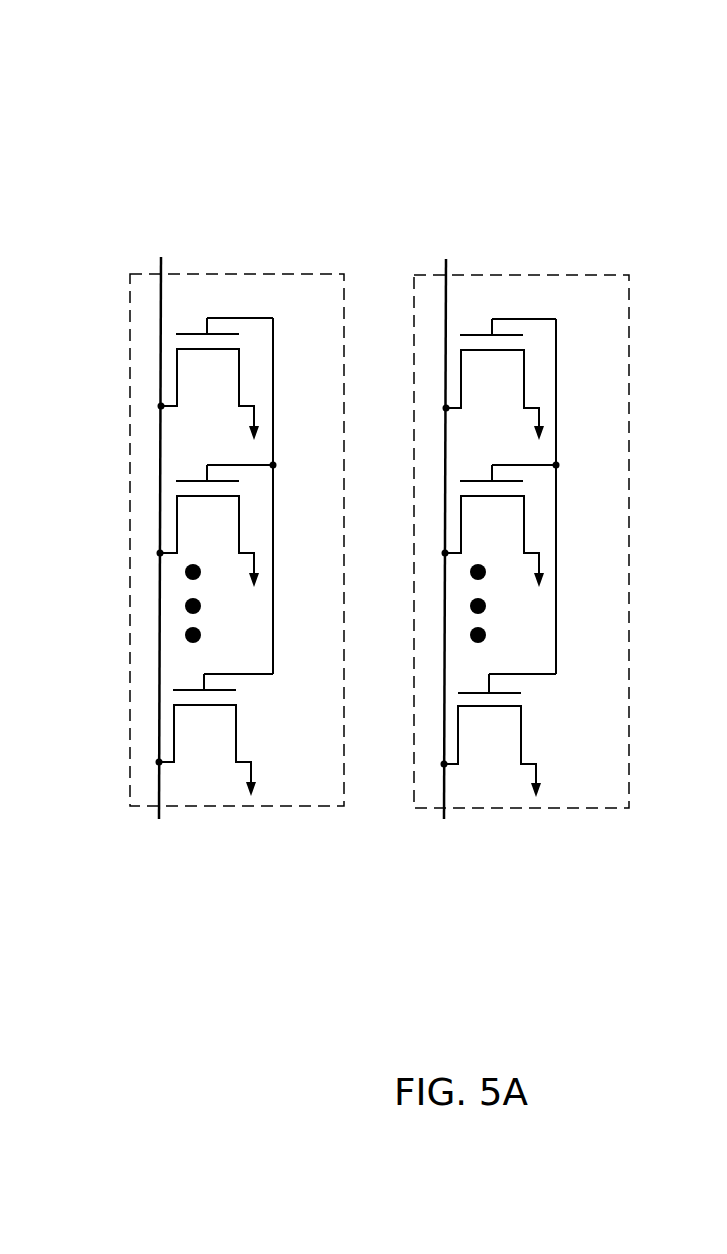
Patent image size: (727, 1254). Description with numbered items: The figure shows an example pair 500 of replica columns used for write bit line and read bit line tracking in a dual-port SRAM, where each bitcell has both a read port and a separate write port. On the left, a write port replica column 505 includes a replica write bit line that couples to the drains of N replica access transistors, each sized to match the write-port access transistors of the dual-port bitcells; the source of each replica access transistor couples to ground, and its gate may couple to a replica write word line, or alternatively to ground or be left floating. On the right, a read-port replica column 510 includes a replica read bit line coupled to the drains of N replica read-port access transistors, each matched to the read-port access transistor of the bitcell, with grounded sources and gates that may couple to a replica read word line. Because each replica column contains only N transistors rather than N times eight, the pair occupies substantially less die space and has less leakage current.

The pair of replica columns 500 is at (108, 64).
The write port replica column 505 is at (282, 805).
The read-port replica column 510 is at (538, 806).